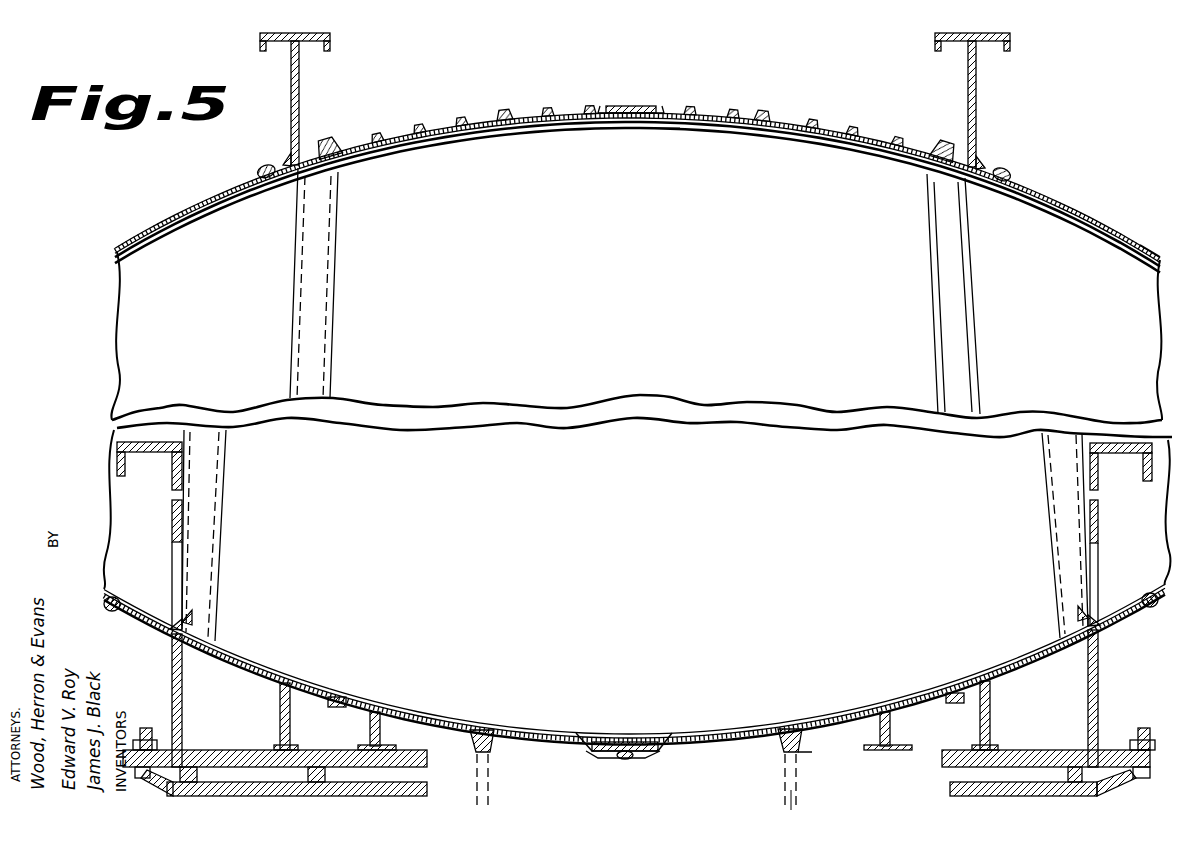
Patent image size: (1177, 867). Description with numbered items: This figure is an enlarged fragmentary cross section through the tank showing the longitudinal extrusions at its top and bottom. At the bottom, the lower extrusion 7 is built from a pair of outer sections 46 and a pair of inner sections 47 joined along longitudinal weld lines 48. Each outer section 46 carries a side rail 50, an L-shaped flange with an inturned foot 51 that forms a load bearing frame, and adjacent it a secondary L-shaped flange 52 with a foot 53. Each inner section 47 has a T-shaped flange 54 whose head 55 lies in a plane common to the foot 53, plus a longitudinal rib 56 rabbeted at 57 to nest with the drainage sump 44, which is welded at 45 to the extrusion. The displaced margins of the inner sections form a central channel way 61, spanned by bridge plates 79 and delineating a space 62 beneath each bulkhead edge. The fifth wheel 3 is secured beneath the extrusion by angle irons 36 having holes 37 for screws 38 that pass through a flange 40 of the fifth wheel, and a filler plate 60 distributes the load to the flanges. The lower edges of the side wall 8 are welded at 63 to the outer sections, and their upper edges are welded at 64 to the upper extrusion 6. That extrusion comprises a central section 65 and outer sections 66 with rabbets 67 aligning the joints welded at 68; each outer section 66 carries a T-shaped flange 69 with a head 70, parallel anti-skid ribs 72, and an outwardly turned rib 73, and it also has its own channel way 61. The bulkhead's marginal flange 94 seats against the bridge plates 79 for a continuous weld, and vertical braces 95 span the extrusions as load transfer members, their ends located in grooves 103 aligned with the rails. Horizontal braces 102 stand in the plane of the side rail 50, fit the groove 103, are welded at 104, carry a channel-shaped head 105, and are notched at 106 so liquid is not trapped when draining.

The fifth wheel 3 is at (165, 783).
The upper extrusion 6 is at (612, 106).
The lower extrusion 7 is at (695, 729).
The side wall 8 is at (185, 210).
The angle iron 36 is at (170, 714).
The hole 37 is at (1150, 752).
The screw 38 is at (148, 738).
The flange 40 is at (1138, 778).
The drainage sump 44 is at (794, 786).
The weld 45 is at (803, 752).
The outer section 46 is at (268, 667).
The inner section 47 is at (455, 717).
The weld line 48 is at (338, 696).
The side rail 50 is at (183, 677).
The foot 51 is at (200, 750).
The secondary L-shaped flange 52 is at (280, 705).
The foot 53 is at (300, 746).
The T-shaped flange 54 is at (380, 715).
The head 55 is at (366, 745).
The longitudinal rib 56 is at (490, 745).
The rabbet 57 is at (481, 730).
The filler plate 60 is at (247, 750).
The channel way 61 is at (660, 105).
The space 62 is at (640, 106).
The weld 63 is at (117, 603).
The weld 64 is at (264, 168).
The central section 65 is at (703, 114).
The outer section 66 is at (380, 134).
The rabbet 67 is at (512, 137).
The weld 68 is at (505, 110).
The T-shaped flange 69 is at (300, 82).
The head 70 is at (330, 38).
The rib 72 is at (420, 124).
The rib 73 is at (328, 140).
The bridge plate 79 is at (633, 131).
The marginal flange 94 is at (1125, 248).
The vertical brace 95 is at (320, 267).
The horizontal brace 102 is at (184, 468).
The locating groove 103 is at (287, 163).
The weld 104 is at (192, 622).
The channel-shaped head 105 is at (150, 440).
The notch 106 is at (180, 568).